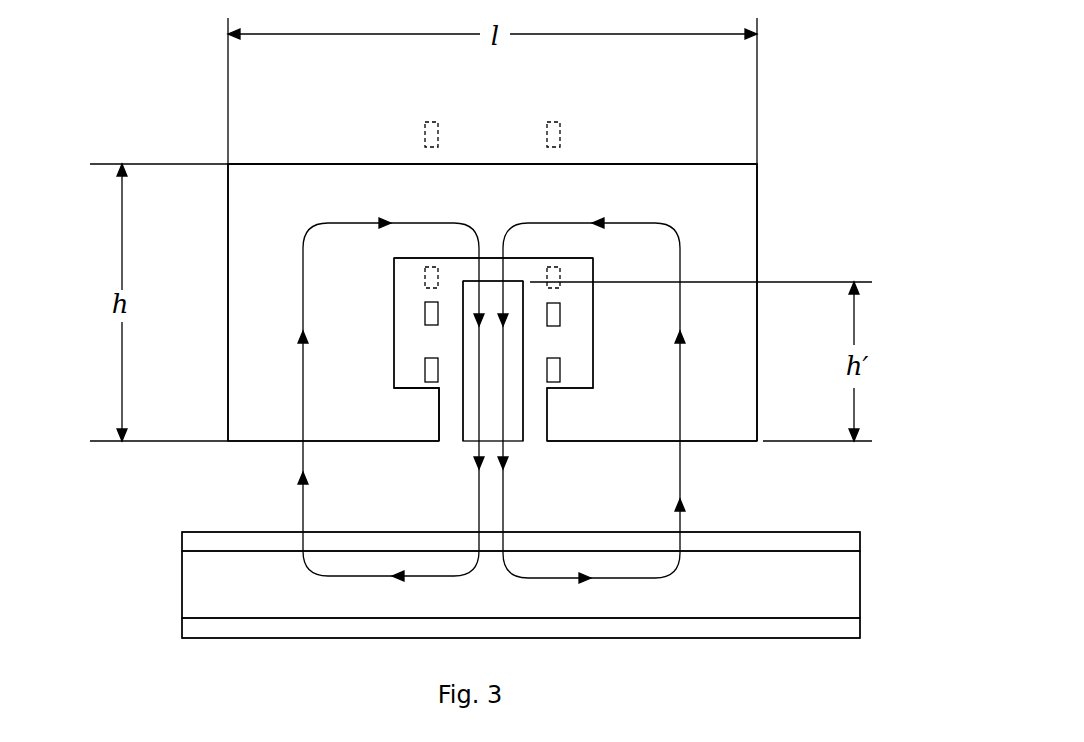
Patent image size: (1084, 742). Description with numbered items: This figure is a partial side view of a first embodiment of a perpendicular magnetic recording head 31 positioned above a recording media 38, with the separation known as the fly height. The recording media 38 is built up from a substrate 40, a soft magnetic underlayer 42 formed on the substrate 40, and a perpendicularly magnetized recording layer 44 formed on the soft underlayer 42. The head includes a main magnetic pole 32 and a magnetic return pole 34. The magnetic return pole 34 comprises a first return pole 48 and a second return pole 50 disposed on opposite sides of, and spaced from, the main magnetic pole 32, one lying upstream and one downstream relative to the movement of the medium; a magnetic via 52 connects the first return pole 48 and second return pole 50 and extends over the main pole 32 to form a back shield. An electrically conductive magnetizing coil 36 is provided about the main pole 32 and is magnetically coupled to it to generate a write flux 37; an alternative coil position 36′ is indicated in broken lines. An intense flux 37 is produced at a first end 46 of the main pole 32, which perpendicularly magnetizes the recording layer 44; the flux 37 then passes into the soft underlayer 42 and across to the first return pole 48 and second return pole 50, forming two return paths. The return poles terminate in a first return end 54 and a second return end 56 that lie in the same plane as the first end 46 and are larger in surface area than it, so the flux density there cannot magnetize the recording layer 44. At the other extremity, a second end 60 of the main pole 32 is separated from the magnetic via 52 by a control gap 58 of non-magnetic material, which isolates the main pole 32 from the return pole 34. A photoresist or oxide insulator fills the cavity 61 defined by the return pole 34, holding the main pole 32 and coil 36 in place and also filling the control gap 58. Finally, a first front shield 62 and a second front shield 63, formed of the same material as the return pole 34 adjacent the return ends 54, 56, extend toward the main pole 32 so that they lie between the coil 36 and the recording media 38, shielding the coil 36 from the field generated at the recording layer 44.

The perpendicular magnetic recording head 31 is at (205, 243).
The magnetic return pole 34 is at (598, 148).
The magnetic via 52 is at (403, 173).
The second return pole 50 is at (247, 339).
The first return pole 48 is at (752, 342).
The second return end 56 is at (258, 441).
The first return end 54 is at (732, 441).
The cavity 61 is at (405, 340).
The first front shield 62 is at (571, 436).
The second front shield 63 is at (412, 443).
The main magnetic pole 32 is at (464, 432).
The first end 46 is at (470, 440).
The second end 60 is at (469, 278).
The control gap 58 is at (513, 271).
The magnetizing coil 36 is at (560, 308).
The alternate coil winding position 36′ is at (435, 122).
The write flux 37 is at (530, 463).
The recording media 38 is at (147, 580).
The recording layer 44 is at (182, 540).
The soft magnetic underlayer 42 is at (222, 602).
The substrate 40 is at (182, 630).